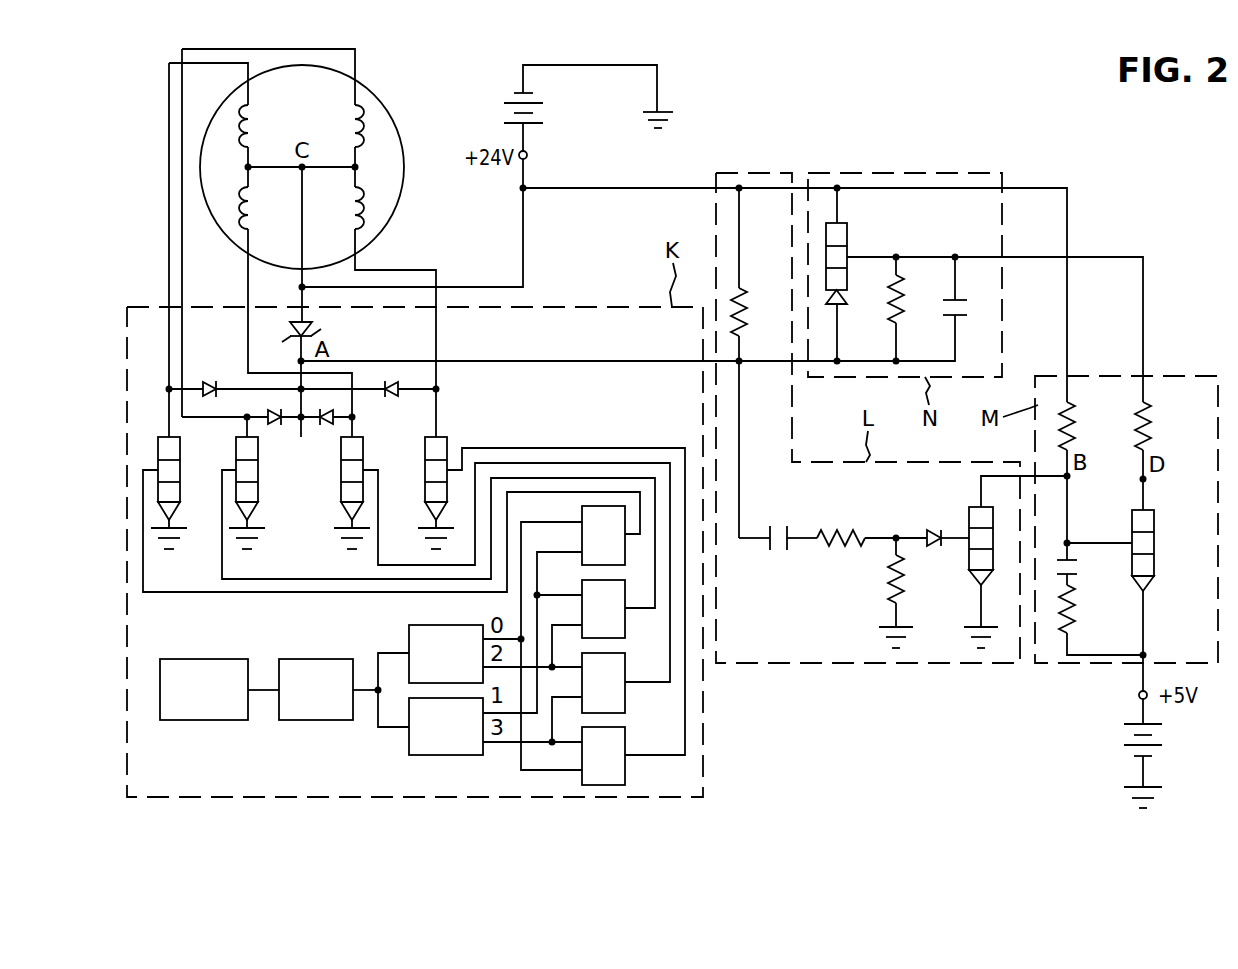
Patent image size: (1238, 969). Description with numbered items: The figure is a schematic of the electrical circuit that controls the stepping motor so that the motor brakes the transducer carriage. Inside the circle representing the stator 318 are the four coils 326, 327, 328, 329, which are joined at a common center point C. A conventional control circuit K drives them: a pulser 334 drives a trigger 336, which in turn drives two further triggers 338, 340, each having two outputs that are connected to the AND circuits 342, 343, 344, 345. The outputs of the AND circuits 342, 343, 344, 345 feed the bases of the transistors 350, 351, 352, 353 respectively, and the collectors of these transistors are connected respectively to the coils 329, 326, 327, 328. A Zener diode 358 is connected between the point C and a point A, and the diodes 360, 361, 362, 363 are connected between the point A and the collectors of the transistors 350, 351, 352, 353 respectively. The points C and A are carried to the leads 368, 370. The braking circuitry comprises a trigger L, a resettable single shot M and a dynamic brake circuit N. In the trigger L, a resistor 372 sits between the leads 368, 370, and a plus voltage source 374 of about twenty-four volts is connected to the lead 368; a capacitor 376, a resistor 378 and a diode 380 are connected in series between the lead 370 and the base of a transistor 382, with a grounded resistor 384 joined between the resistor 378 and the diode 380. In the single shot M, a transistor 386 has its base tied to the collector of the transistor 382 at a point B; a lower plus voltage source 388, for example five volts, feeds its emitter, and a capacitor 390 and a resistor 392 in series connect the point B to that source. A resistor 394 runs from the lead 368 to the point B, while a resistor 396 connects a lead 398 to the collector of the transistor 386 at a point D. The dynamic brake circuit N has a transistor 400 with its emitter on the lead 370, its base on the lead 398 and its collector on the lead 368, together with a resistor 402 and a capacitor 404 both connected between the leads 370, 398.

The stator 318 is at (324, 167).
The coil 326 is at (269, 116).
The coil 327 is at (338, 116).
The coil 328 is at (269, 222).
The coil 329 is at (338, 222).
The pulser 334 is at (204, 666).
The trigger 336 is at (316, 666).
The trigger 338 is at (420, 647).
The trigger 340 is at (419, 735).
The AND circuit 342 is at (619, 560).
The AND circuit 343 is at (619, 633).
The AND circuit 344 is at (619, 707).
The AND circuit 345 is at (619, 780).
The transistor 350 is at (391, 514).
The transistor 351 is at (438, 512).
The transistor 352 is at (484, 559).
The transistor 353 is at (535, 596).
The Zener diode 358 is at (329, 375).
The diode 360 is at (210, 362).
The diode 361 is at (285, 441).
The diode 362 is at (317, 454).
The diode 363 is at (392, 410).
The lead 368 is at (795, 295).
The lead 370 is at (628, 365).
The resistor 372 is at (757, 363).
The plus voltage source 374 is at (558, 126).
The capacitor 376 is at (778, 563).
The resistor 378 is at (872, 514).
The diode 380 is at (942, 514).
The transistor 382 is at (997, 562).
The grounded resistor 384 is at (871, 593).
The transistor 386 is at (1132, 600).
The plus voltage source 388 is at (1112, 753).
The capacitor 390 is at (1090, 565).
The resistor 392 is at (1101, 620).
The resistor 394 is at (1088, 475).
The resistor 396 is at (1168, 450).
The lead 398 is at (995, 299).
The transistor 400 is at (860, 274).
The resistor 402 is at (875, 309).
The capacitor 404 is at (940, 302).